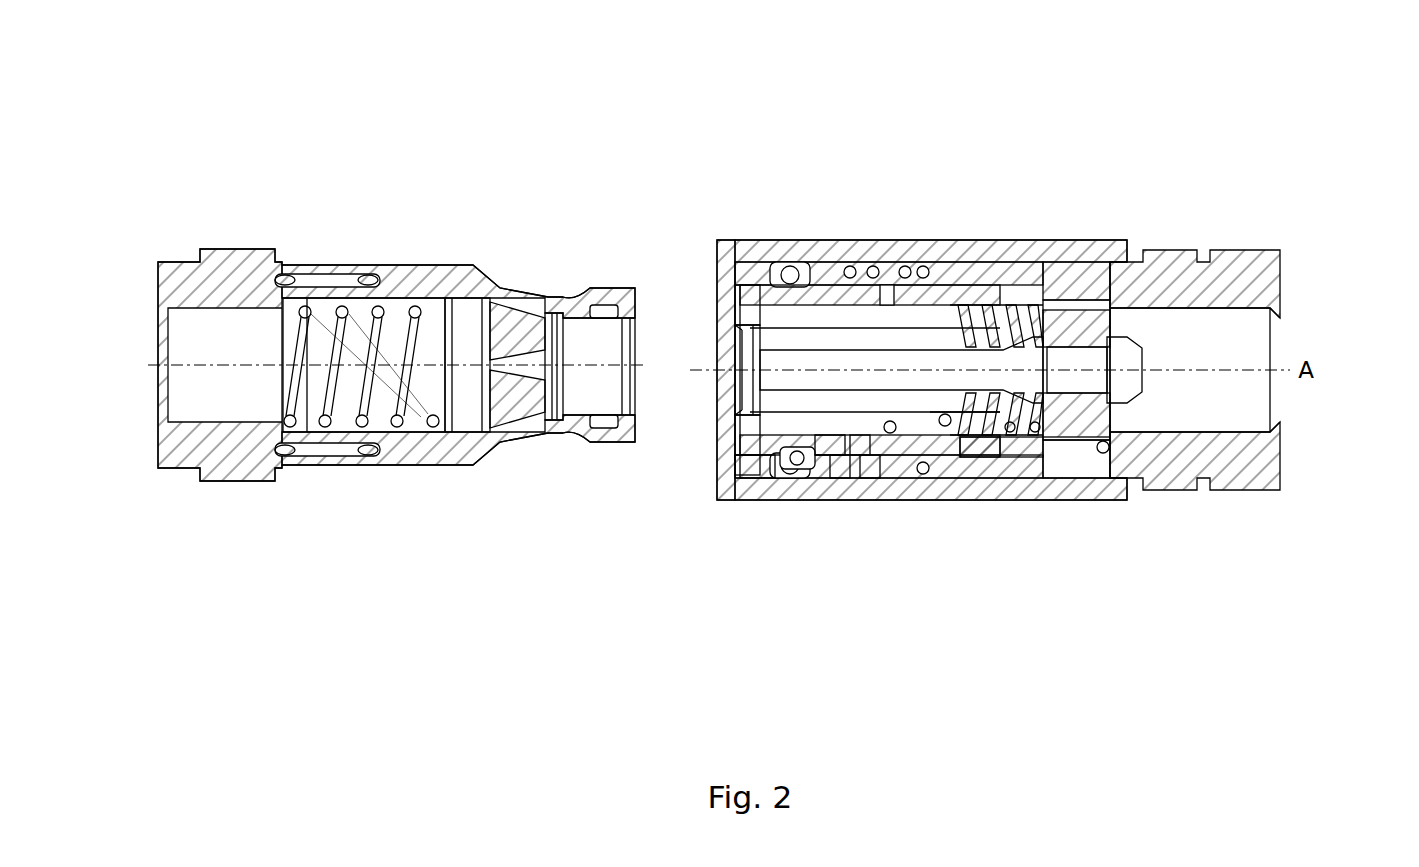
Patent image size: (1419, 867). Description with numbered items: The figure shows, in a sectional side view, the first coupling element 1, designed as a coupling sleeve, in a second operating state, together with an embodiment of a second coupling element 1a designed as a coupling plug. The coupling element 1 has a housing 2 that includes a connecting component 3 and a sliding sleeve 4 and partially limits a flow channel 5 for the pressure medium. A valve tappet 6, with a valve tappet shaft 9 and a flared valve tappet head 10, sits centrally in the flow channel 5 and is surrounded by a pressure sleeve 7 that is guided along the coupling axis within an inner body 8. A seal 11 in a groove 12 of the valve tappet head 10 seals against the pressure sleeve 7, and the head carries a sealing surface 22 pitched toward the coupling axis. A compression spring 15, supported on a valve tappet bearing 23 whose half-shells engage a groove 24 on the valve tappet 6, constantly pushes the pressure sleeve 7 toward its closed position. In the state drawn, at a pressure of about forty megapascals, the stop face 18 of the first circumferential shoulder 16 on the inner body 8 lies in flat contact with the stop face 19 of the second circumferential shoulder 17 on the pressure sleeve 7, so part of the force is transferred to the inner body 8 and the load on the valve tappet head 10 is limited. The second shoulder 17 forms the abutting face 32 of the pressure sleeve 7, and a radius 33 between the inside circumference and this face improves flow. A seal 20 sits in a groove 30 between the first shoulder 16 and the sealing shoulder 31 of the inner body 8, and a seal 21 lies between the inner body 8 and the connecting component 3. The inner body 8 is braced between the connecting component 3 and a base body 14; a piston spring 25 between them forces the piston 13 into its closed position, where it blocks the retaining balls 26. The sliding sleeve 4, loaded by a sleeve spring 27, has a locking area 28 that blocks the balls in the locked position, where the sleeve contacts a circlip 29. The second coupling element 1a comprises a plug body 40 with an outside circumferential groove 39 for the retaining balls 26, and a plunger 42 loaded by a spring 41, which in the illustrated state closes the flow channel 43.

The coupling element 1 is at (1302, 184).
The second coupling element 1a is at (484, 184).
The housing 2 is at (1020, 514).
The connecting component 3 is at (1272, 283).
The sliding sleeve 4 is at (727, 247).
The flow channel 5 is at (1228, 338).
The valve tappet 6 is at (940, 362).
The pressure sleeve 7 is at (820, 325).
The inner body 8 is at (1078, 452).
The valve tappet shaft 9 is at (843, 393).
The valve tappet head 10 is at (720, 405).
The seal 11 is at (737, 335).
The groove 12 is at (737, 394).
The piston 13 is at (722, 465).
The base body 14 is at (760, 268).
The compression spring 15 is at (997, 305).
The first circumferential shoulder 16 is at (906, 306).
The second circumferential shoulder 17 is at (866, 306).
The stop face 18 is at (908, 418).
The stop face 19 is at (945, 402).
The seal 20 is at (887, 295).
The seal 21 is at (1103, 288).
The sealing surface 22 is at (738, 322).
The valve tappet bearing 23 is at (1073, 347).
The groove 24 is at (1080, 395).
The piston spring 25 is at (970, 318).
The retaining balls 26 is at (797, 466).
The sleeve spring 27 is at (863, 478).
The locking area 28 is at (822, 457).
The circlip 29 is at (737, 462).
The groove 30 is at (880, 430).
The sealing shoulder 31 is at (921, 270).
The abutting face 32 is at (940, 405).
The radius 33 is at (976, 412).
The outside circumferential groove 39 is at (582, 443).
The plug body 40 is at (566, 297).
The spring 41 is at (415, 310).
The plunger 42 is at (542, 405).
The flow channel 43 is at (416, 427).